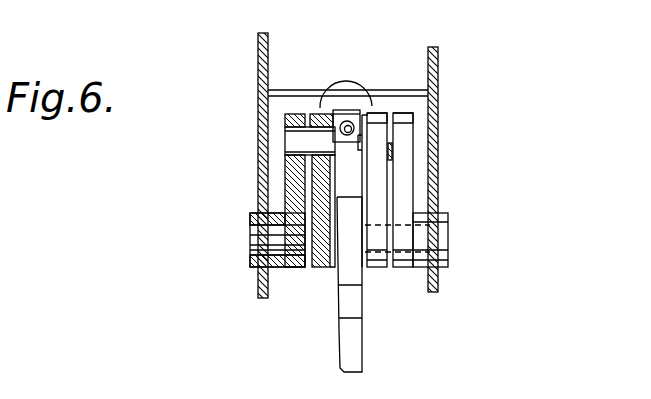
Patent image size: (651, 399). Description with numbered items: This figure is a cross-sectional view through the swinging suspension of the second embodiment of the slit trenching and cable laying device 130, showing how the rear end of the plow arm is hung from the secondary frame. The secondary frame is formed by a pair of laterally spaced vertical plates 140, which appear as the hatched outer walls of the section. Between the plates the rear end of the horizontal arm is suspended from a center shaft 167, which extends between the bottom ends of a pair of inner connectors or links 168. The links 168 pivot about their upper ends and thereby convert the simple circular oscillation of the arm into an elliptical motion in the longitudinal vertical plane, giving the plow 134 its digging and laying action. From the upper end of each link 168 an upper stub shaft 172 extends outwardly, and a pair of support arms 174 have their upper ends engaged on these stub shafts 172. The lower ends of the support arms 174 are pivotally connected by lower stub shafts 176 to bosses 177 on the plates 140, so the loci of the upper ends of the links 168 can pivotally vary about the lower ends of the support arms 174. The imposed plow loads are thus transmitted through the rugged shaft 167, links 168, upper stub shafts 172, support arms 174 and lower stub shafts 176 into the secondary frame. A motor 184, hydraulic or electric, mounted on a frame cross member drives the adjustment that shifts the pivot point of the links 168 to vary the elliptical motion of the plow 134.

The slit trenching and cable laying device 130 is at (441, 108).
The slit trenching and cable laying plow 134 is at (376, 334).
The vertical plates 140 is at (258, 123).
The center shaft 167 is at (323, 247).
The inner connectors or links 168 is at (300, 168).
The upper stub shafts 172 is at (297, 113).
The support arms 174 is at (290, 199).
The lower stub shafts 176 is at (263, 249).
The bosses 177 is at (253, 267).
The motor 184 is at (343, 92).